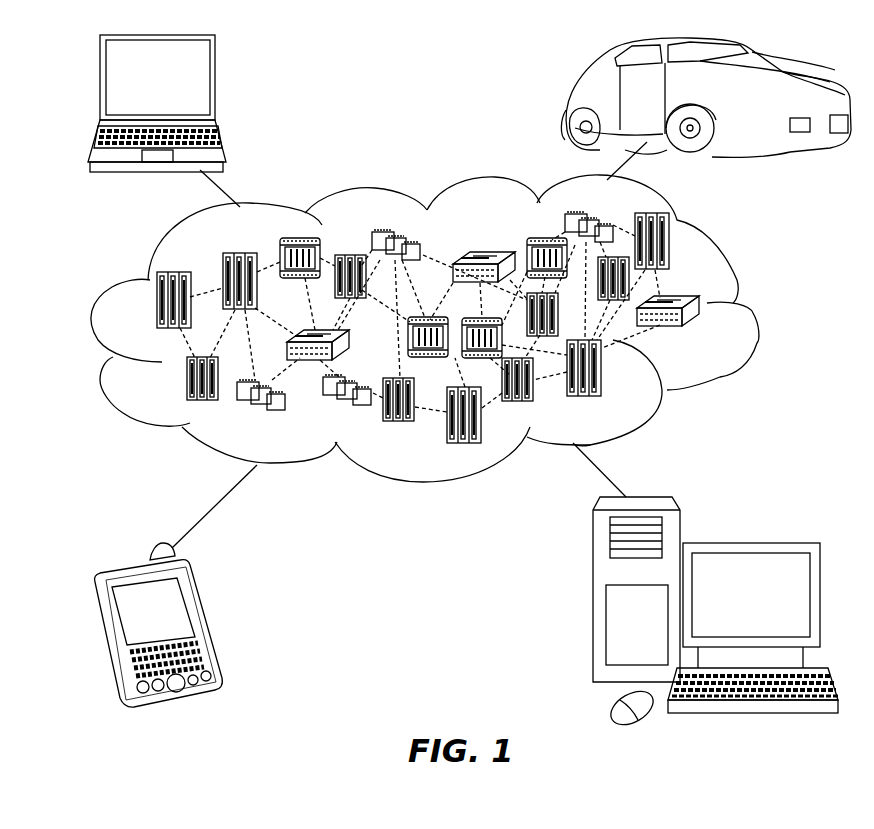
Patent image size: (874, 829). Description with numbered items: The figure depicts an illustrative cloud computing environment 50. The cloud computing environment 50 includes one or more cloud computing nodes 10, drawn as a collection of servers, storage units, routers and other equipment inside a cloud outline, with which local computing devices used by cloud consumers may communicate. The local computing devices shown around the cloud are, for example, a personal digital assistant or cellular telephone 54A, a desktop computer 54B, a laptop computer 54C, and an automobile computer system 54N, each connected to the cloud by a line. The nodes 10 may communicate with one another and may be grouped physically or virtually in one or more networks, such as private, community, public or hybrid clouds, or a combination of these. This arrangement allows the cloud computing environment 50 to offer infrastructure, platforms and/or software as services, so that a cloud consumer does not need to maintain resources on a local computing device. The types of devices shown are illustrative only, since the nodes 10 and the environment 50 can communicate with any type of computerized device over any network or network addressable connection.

The cloud computing environment 50 is at (741, 300).
The cloud computing nodes 10 is at (470, 327).
The personal digital assistant (PDA) or cellular telephone 54A is at (207, 622).
The desktop computer 54B is at (748, 543).
The laptop computer 54C is at (213, 87).
The automobile computer system 54N is at (568, 100).